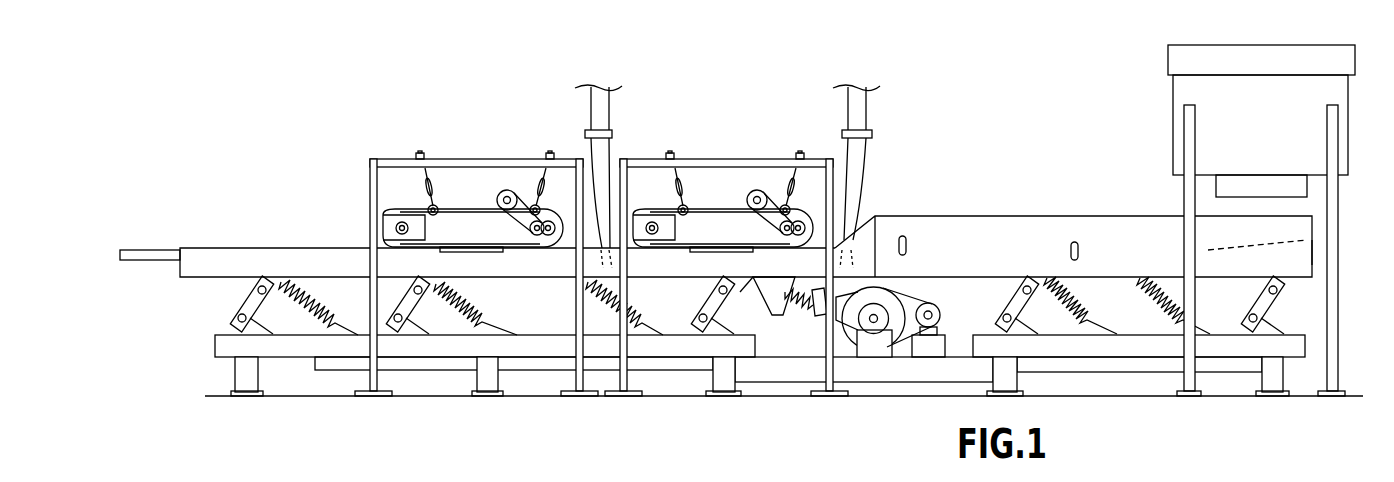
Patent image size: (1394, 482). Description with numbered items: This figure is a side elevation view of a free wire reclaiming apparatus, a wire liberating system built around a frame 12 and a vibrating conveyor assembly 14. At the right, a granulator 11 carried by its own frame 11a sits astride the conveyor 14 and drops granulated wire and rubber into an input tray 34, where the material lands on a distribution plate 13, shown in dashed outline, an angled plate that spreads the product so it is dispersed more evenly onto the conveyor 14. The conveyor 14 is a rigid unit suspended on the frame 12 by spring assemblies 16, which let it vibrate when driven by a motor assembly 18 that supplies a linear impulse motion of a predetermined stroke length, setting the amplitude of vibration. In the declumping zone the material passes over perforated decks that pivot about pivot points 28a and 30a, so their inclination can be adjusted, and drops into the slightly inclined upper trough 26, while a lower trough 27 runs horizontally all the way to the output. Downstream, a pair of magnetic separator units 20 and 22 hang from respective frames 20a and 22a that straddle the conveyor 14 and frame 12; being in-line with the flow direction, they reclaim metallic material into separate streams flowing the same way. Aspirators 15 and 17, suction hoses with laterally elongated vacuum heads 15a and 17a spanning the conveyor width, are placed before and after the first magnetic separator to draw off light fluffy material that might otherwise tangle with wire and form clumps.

The granulator 11 is at (1184, 120).
The frame 11a is at (1327, 120).
The frame 12 is at (1296, 352).
The distribution plate 13 is at (1238, 252).
The vibrating conveyor assembly 14 is at (1313, 252).
The aspirator 15 is at (847, 108).
The vacuum head 15a is at (835, 257).
The spring assemblies 16 is at (312, 295).
The aspirator 17 is at (588, 110).
The vacuum head 17a is at (600, 258).
The motor assembly 18 is at (942, 312).
The magnetic separator unit 20 is at (723, 189).
The frame 20a is at (726, 251).
The magnetic separator unit 22 is at (475, 225).
The frame 22a is at (405, 157).
The upper trough 26 is at (150, 248).
The lower trough 27 is at (178, 277).
The pivot point 28a is at (1074, 241).
The pivot point 30a is at (902, 234).
The input tray 34 is at (1267, 230).